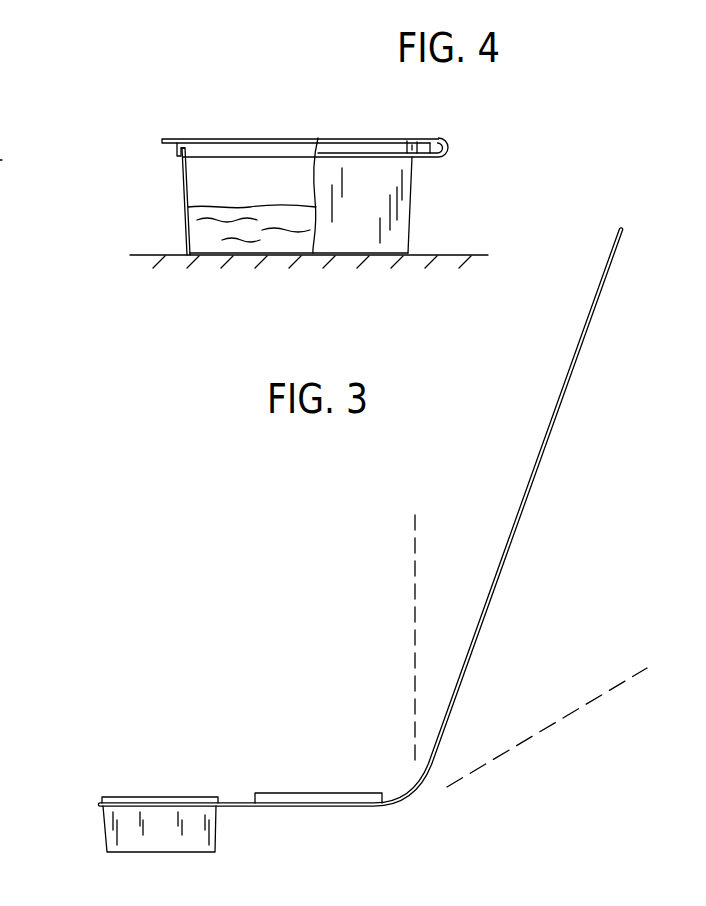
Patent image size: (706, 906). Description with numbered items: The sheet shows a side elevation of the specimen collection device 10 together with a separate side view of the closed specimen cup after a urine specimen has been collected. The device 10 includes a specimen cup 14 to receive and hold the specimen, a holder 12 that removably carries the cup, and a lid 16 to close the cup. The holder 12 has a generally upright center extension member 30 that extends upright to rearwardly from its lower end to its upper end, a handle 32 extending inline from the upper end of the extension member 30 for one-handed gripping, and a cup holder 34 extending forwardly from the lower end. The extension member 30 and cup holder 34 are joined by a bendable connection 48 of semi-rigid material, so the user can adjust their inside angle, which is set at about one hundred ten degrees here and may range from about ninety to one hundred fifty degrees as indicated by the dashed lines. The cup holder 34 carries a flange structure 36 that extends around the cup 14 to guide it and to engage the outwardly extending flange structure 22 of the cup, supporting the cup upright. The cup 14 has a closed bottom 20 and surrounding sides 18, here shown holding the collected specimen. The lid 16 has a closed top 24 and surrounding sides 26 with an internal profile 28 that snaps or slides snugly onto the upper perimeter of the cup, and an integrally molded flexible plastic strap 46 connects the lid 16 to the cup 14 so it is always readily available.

In FIG. 3, the specimen collection device 10 is at (266, 525).
In FIG. 3, the holder 12 is at (497, 651).
In FIG. 4, the specimen cup 14 is at (436, 182).
In FIG. 3, the specimen cup 14 is at (82, 852).
In FIG. 4, the lid 16 is at (350, 124).
In FIG. 3, the lid 16 is at (365, 778).
In FIG. 4, the surrounding sides 18 is at (185, 207).
In FIG. 4, the closed bottom 20 is at (212, 253).
In FIG. 4, the flange structure 22 is at (180, 162).
In FIG. 3, the flange structure 22 is at (100, 801).
In FIG. 4, the closed top 24 is at (250, 139).
In FIG. 4, the surrounding sides 26 is at (178, 150).
In FIG. 4, the internal profile 28 is at (183, 153).
In FIG. 3, the extension member 30 is at (523, 508).
In FIG. 4, the handle 32 is at (14, 156).
In FIG. 3, the handle 32 is at (583, 337).
In FIG. 3, the cup holder 34 is at (320, 807).
In FIG. 3, the flange structure 36 is at (102, 808).
In FIG. 4, the flexible plastic strap 46 is at (450, 150).
In FIG. 3, the flexible plastic strap 46 is at (248, 802).
In FIG. 3, the bendable connection 48 is at (405, 800).